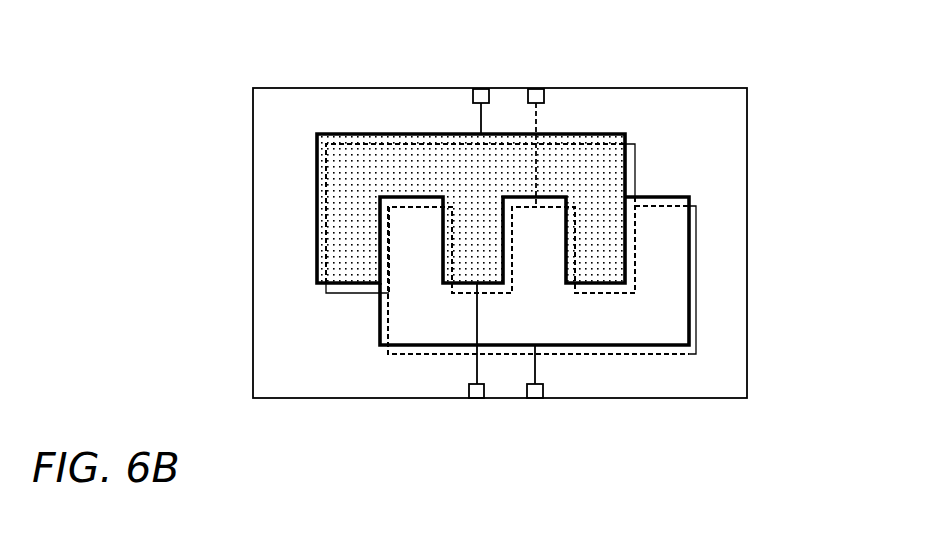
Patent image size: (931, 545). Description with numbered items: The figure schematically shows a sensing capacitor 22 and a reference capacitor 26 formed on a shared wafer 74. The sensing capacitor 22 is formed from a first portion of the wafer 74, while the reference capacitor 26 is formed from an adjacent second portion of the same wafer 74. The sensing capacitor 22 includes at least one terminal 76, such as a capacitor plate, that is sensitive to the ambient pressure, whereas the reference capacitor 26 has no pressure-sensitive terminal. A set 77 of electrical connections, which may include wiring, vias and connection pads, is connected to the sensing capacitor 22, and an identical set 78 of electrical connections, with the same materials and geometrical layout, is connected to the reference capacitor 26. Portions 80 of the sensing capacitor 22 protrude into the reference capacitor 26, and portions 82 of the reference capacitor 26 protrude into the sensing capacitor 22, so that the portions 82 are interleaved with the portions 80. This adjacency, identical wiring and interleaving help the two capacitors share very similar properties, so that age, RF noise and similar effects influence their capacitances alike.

The sensing capacitor 22 is at (322, 104).
The wafer 74 is at (696, 88).
The terminal 76 is at (317, 172).
The reference capacitor 26 is at (388, 374).
The portions of the sensing capacitor 80 is at (489, 257).
The portions of the reference capacitor 82 is at (424, 257).
The set of electrical connections 77 is at (481, 90).
The set of electrical connections 78 is at (538, 90).